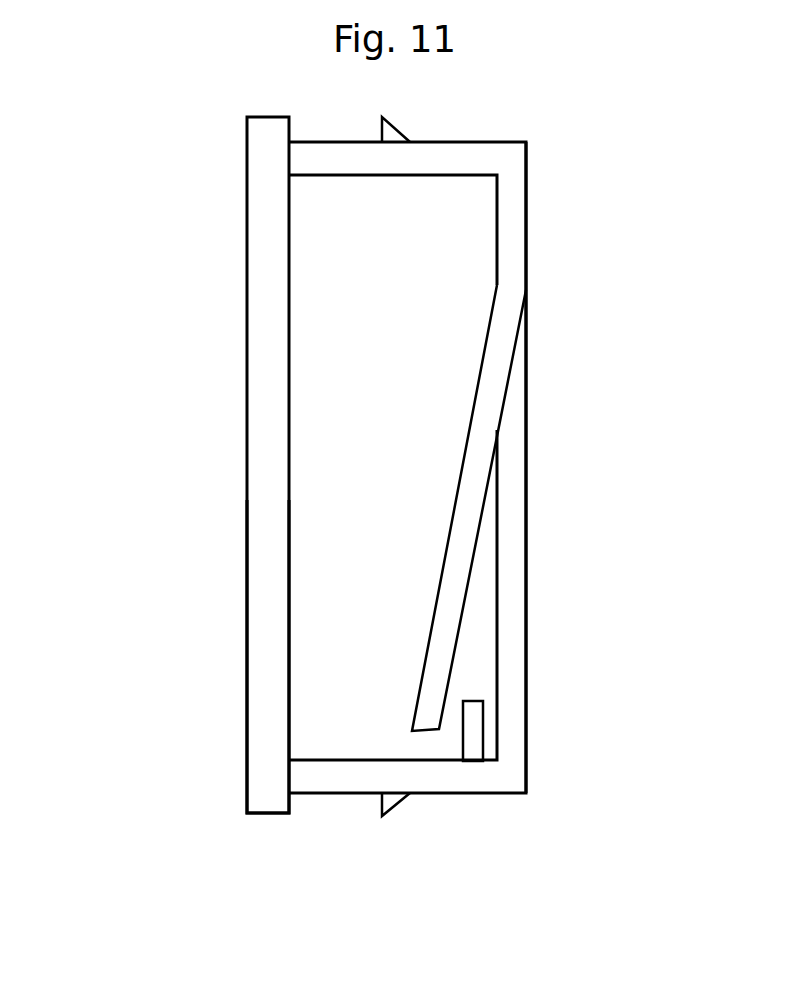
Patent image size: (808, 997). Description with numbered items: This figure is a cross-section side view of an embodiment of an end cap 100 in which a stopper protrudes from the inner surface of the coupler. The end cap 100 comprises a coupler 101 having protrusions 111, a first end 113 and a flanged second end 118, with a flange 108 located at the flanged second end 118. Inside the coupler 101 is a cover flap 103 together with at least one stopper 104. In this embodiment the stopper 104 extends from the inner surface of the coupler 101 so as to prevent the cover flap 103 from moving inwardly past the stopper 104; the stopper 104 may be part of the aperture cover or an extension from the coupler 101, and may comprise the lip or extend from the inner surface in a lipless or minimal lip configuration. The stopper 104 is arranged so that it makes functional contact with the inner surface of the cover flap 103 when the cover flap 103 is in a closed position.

The end cap 100 is at (198, 491).
The coupler 101 is at (519, 800).
The cover flap 103 is at (484, 560).
The stopper 104 is at (495, 723).
The flange 108 is at (253, 225).
The protrusions 111 is at (407, 119).
The first end 113 is at (558, 262).
The flanged second end 118 is at (228, 639).